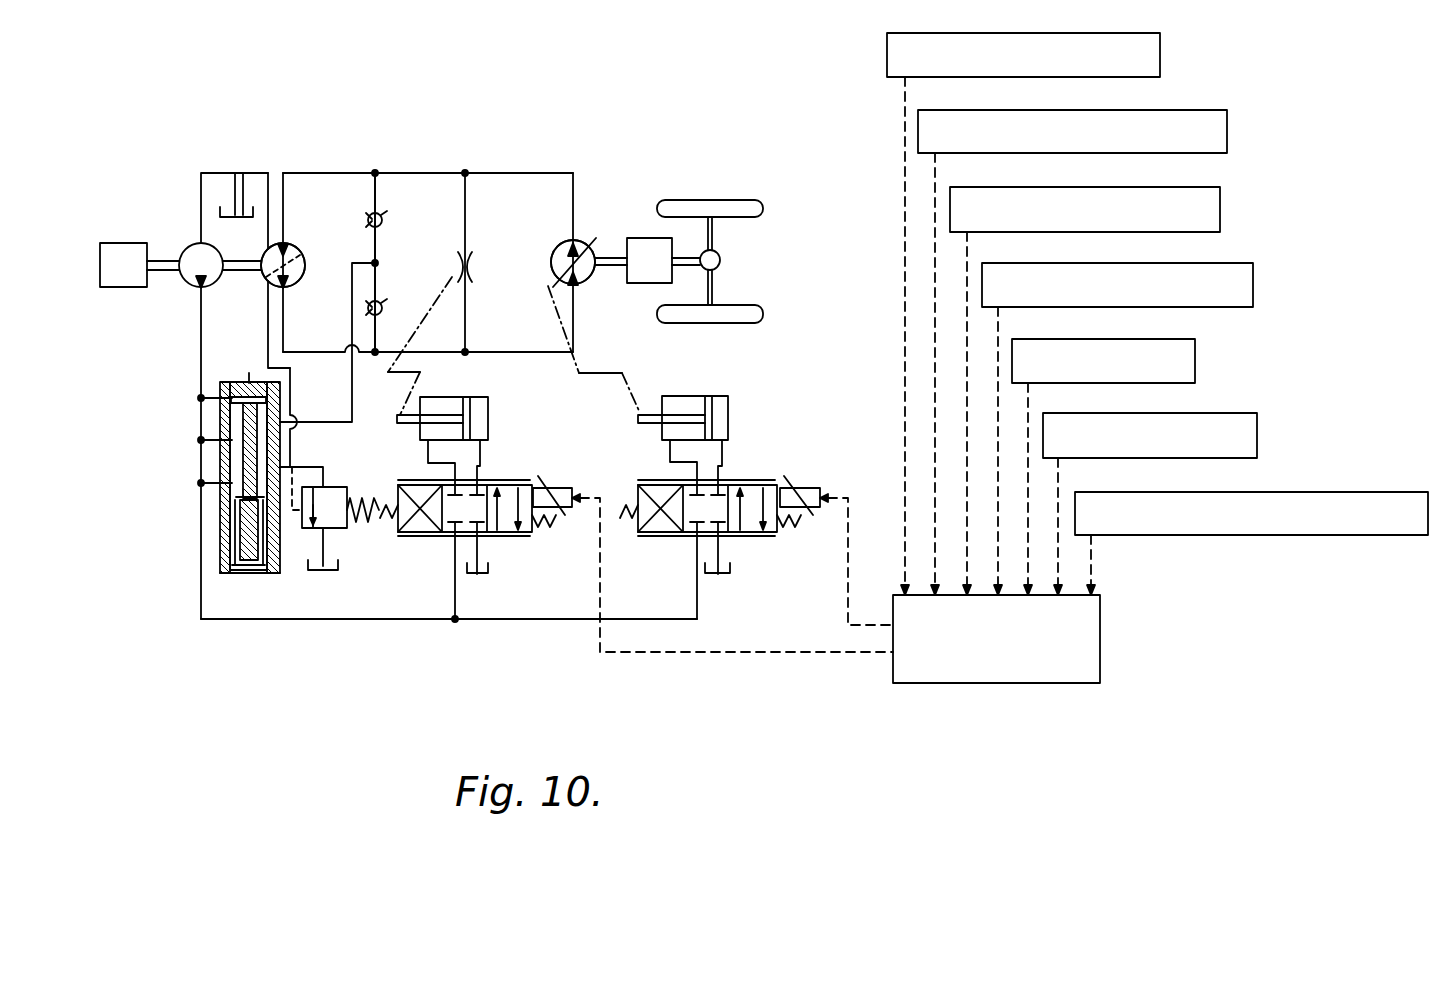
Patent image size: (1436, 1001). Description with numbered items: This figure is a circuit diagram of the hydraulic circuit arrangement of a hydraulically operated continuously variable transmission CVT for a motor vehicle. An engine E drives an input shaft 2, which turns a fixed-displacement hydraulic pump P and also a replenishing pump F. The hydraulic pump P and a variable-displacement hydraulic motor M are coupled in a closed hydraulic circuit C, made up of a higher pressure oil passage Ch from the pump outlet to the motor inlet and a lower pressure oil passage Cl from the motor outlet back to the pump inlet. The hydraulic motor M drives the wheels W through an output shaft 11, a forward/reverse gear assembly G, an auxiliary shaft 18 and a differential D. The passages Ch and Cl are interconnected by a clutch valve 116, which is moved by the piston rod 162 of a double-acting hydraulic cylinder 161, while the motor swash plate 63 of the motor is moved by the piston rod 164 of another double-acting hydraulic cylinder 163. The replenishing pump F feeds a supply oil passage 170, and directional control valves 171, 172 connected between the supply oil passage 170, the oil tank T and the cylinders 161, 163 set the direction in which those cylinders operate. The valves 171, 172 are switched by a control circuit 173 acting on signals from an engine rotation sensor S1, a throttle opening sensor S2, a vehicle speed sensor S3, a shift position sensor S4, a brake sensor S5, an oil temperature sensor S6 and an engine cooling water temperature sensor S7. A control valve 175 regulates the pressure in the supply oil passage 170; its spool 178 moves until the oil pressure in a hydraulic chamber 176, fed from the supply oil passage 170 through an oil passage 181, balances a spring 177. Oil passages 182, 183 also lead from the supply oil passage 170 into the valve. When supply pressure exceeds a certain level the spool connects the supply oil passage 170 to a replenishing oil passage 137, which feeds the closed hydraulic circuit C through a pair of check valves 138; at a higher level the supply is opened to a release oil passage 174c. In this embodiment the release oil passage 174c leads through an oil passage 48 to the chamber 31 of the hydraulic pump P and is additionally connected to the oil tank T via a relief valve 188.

The input shaft 2 is at (162, 268).
The engine E is at (132, 279).
The replenishing pump F is at (220, 271).
The oil tank T is at (234, 212).
The hydraulic pump P is at (303, 256).
The chamber 31 is at (297, 271).
The oil passage 48 is at (266, 323).
The check valves 138 is at (383, 216).
The replenishing oil passage 137 is at (352, 383).
The clutch valve 116 is at (457, 270).
The continuously variable transmission CVT is at (526, 173).
The closed hydraulic circuit C is at (488, 173).
The lower pressure oil passage Cl is at (412, 173).
The higher pressure oil passage Ch is at (477, 352).
The hydraulic motor M is at (560, 247).
The motor swash plate 63 is at (552, 281).
The output shaft 11 is at (612, 267).
The forward/reverse gear assembly G is at (659, 276).
The auxiliary shaft 18 is at (683, 262).
The differential D is at (720, 256).
The wheels W is at (734, 200).
The supply oil passage 170 is at (284, 620).
The control valve 175 is at (222, 500).
The hydraulic chamber 176 is at (247, 364).
The spring 177 is at (246, 577).
The spool 178 is at (238, 533).
The oil passage 181 is at (202, 397).
The oil passage 182 is at (202, 439).
The oil passage 183 is at (202, 482).
The release oil passage 174c is at (291, 452).
The relief valve 188 is at (333, 487).
The double-acting hydraulic cylinder 161 is at (482, 398).
The piston rod 162 is at (415, 424).
The double-acting hydraulic cylinder 163 is at (722, 396).
The piston rod 164 is at (653, 425).
The directional control valve 171 is at (442, 538).
The directional control valve 172 is at (693, 536).
The control circuit 173 is at (1100, 628).
The engine rotation sensor S1 is at (1162, 52).
The throttle opening sensor S2 is at (1227, 131).
The vehicle speed sensor S3 is at (1220, 210).
The shift position sensor S4 is at (1253, 285).
The brake sensor S5 is at (1195, 360).
The oil temperature sensor S6 is at (1257, 434).
The engine cooling water temperature sensor S7 is at (1340, 535).